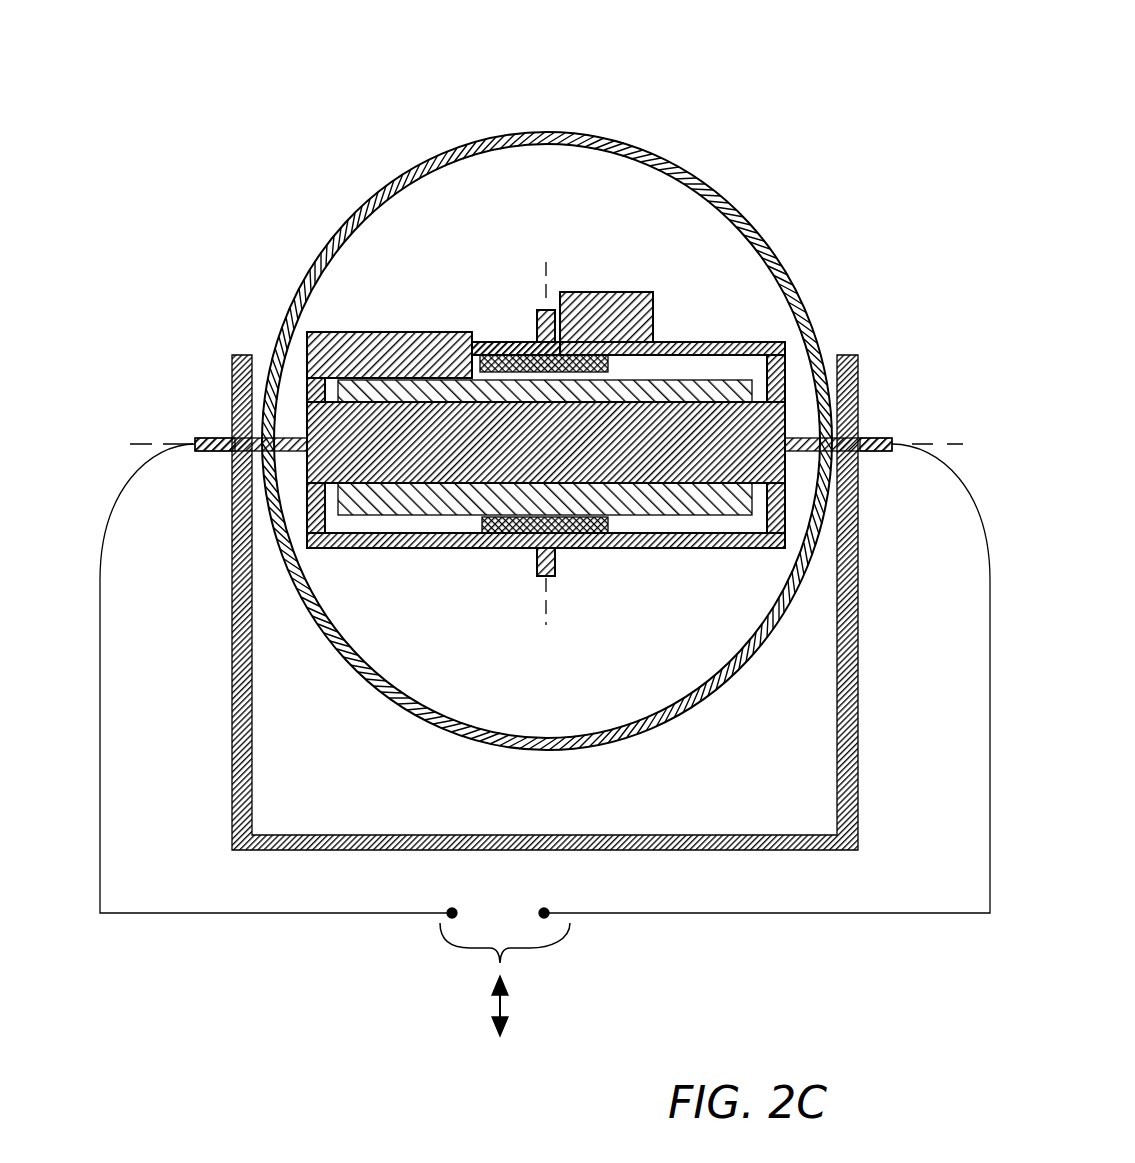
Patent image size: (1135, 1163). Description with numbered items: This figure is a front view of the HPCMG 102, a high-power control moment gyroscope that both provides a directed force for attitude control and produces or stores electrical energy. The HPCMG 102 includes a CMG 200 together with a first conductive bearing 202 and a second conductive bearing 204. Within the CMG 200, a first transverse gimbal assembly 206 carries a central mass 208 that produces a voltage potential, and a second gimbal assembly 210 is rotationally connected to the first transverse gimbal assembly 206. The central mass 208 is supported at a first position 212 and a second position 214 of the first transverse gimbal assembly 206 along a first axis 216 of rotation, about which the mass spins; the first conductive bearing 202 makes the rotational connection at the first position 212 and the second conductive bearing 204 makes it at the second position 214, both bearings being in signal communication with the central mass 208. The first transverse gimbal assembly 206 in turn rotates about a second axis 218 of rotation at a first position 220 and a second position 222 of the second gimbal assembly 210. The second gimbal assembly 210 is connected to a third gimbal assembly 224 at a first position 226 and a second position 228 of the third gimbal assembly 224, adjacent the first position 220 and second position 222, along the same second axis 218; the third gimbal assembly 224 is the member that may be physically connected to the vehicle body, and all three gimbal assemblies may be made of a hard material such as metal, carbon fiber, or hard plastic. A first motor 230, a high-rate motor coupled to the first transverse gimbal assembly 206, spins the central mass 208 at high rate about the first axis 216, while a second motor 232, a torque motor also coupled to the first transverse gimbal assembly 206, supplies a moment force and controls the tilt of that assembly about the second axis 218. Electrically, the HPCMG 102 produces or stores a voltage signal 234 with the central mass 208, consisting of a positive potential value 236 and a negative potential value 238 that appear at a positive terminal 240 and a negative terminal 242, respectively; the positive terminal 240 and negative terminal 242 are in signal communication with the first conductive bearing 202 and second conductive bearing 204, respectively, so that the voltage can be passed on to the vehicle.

The HPCMG 102 is at (846, 82).
The CMG 200 is at (289, 214).
The first conductive bearing 202 is at (580, 362).
The second conductive bearing 204 is at (515, 520).
The first transverse gimbal assembly 206 is at (728, 342).
The central mass 208 is at (739, 396).
The second gimbal assembly 210 is at (545, 746).
The first position of the first transverse gimbal assembly 212 is at (536, 342).
The second position of the first transverse gimbal assembly 214 is at (595, 548).
The first axis of rotation 216 is at (546, 447).
The second axis of rotation 218 is at (551, 446).
The first position of the second gimbal assembly 220 is at (267, 437).
The second position of the second gimbal assembly 222 is at (826, 437).
The third gimbal assembly 224 is at (232, 712).
The first position of the third gimbal assembly 226 is at (234, 457).
The second position of the third gimbal assembly 228 is at (851, 438).
The first motor 230 is at (607, 292).
The second motor 232 is at (328, 332).
The voltage signal 234 is at (505, 997).
The positive potential value 236 is at (284, 681).
The negative potential value 238 is at (759, 681).
The positive terminal 240 is at (207, 438).
The negative terminal 242 is at (880, 438).